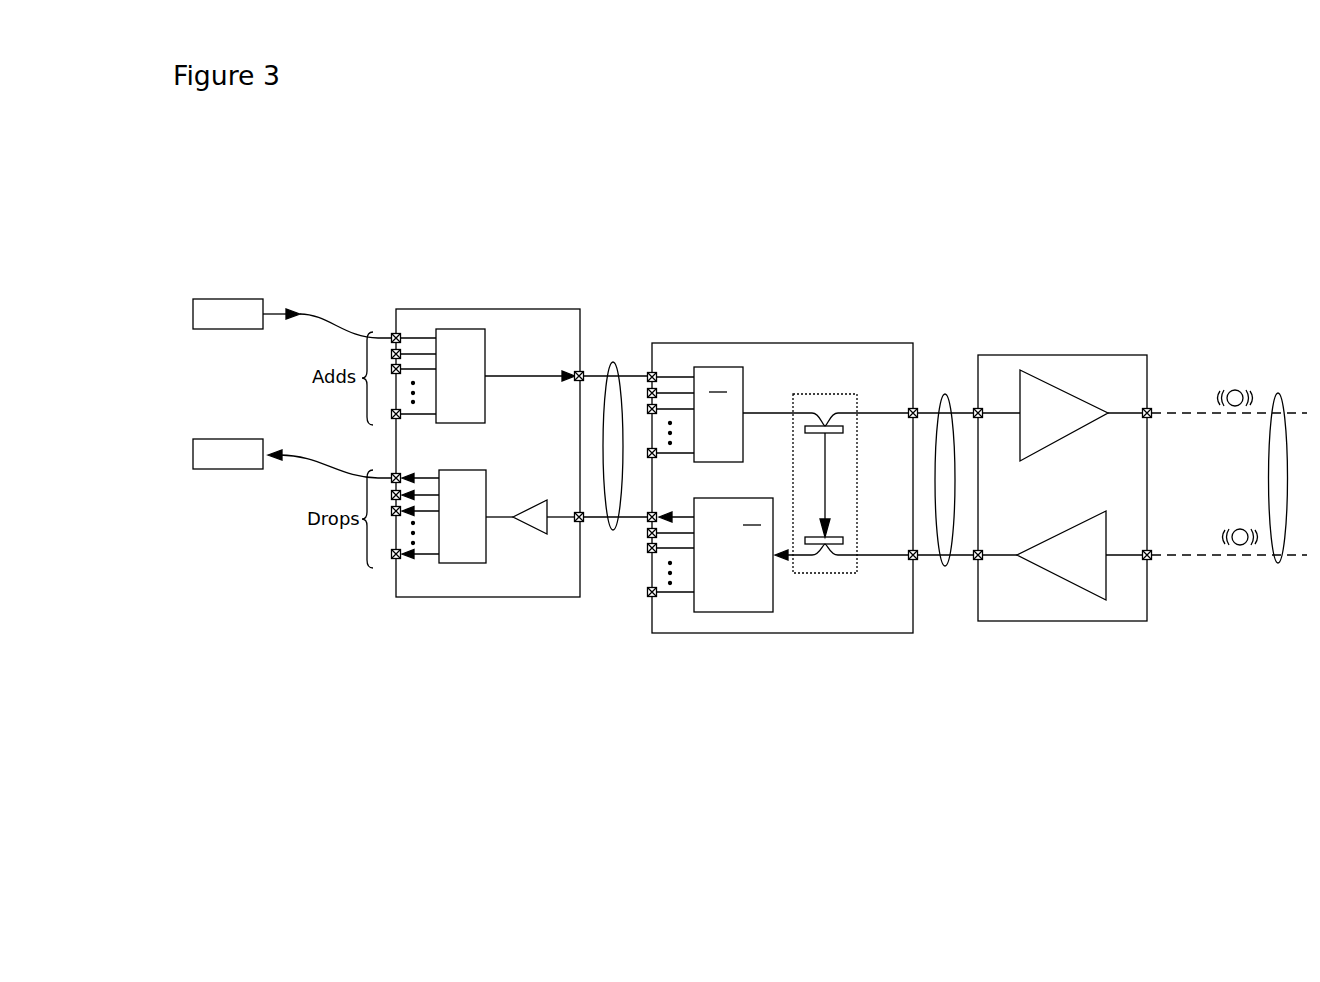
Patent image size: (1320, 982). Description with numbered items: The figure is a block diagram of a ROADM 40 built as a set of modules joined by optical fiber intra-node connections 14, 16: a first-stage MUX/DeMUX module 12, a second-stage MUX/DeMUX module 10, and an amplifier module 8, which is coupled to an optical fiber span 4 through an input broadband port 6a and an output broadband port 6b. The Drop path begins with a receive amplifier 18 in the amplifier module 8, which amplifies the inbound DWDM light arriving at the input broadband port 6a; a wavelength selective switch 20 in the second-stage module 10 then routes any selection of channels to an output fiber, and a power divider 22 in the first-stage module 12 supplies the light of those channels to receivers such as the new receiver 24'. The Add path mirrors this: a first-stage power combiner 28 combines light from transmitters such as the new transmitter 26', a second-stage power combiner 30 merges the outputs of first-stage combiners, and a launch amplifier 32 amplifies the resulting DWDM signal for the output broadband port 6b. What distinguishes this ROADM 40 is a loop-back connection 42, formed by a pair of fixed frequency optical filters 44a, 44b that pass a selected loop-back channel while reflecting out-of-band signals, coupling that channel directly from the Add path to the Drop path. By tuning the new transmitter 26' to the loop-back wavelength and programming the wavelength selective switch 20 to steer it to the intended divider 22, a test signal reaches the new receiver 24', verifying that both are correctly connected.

The ROADM 40 is at (970, 243).
The optical fiber span 4 is at (1278, 393).
The input broadband port 6a is at (1151, 550).
The output broadband port 6b is at (1151, 408).
The amplifier module 8 is at (1053, 355).
The second-stage MUX/DeMUX module 10 is at (797, 343).
The first-stage MUX/DeMUX module 12 is at (542, 309).
The optical fiber intra-node connection 14 is at (613, 362).
The optical fiber intra-node connection 16 is at (945, 394).
The receive amplifier 18 is at (1056, 536).
The wavelength selective switch 20 is at (782, 555).
The power divider 22 is at (488, 496).
The new receiver 24' is at (285, 436).
The new transmitter 26' is at (290, 296).
The first-stage power combiner 28 is at (487, 362).
The second-stage power combiner 30 is at (782, 414).
The launch amplifier 32 is at (1084, 398).
The loop-back connection 42 is at (832, 394).
The fixed frequency optical filter 44a is at (843, 543).
The fixed frequency optical filter 44b is at (843, 434).